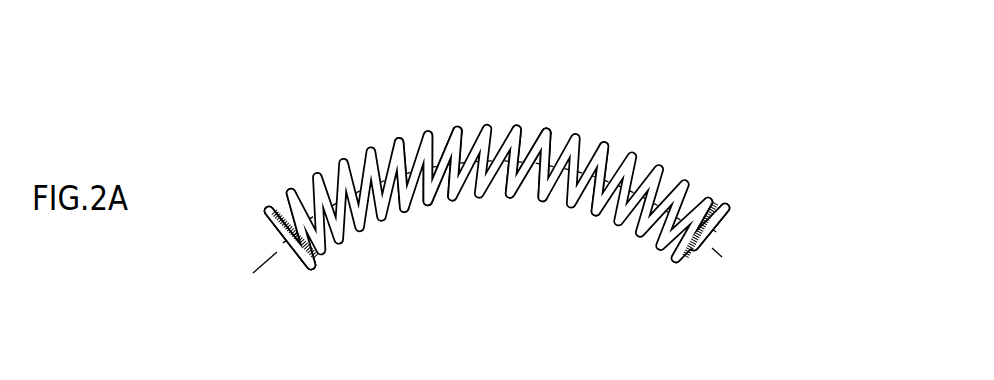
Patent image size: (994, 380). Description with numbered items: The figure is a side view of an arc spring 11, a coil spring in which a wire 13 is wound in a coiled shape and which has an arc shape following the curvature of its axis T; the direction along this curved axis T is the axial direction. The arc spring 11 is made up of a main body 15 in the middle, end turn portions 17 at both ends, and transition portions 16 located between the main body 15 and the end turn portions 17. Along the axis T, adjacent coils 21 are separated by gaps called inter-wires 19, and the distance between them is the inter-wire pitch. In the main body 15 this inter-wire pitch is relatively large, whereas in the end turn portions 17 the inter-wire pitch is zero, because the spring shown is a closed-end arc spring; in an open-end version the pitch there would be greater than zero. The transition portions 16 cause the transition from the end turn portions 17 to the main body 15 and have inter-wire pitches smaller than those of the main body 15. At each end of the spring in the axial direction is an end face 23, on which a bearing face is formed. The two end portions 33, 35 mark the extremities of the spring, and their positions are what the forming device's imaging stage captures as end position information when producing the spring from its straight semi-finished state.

The arc spring 11 is at (670, 148).
The wire 13 is at (406, 136).
The main body 15 is at (541, 133).
The transition portion 16 is at (321, 264).
The end turn portion 17 is at (265, 212).
The inter-wire 19 is at (419, 210).
The coil 21 is at (457, 130).
The end face 23 is at (275, 232).
The end portion 33 is at (680, 269).
The end portion 35 is at (298, 263).
The axis T is at (727, 263).